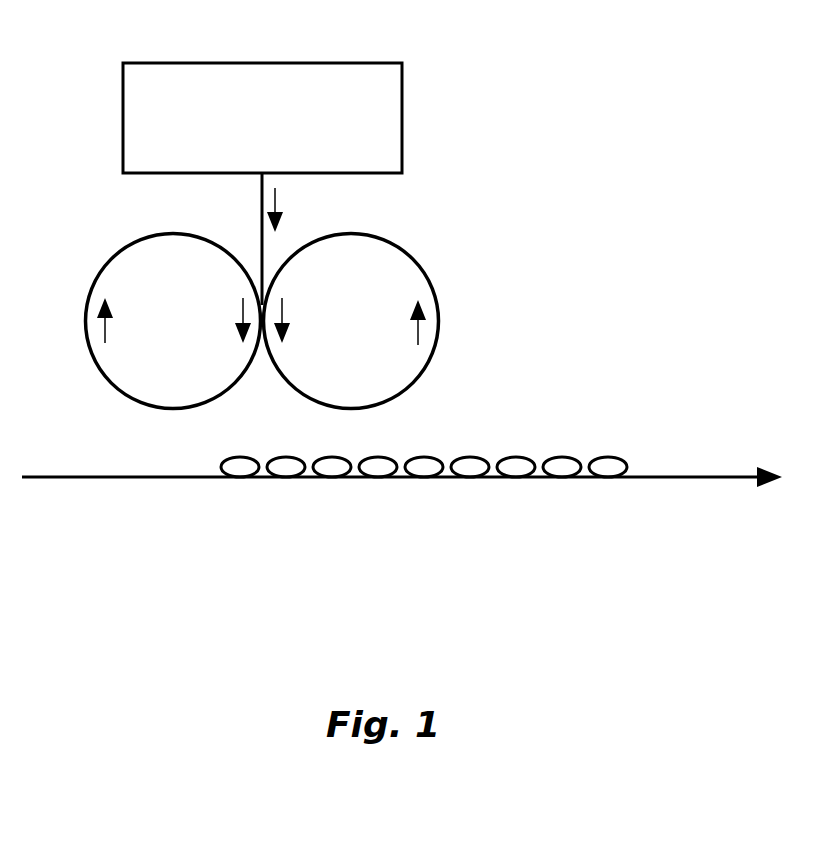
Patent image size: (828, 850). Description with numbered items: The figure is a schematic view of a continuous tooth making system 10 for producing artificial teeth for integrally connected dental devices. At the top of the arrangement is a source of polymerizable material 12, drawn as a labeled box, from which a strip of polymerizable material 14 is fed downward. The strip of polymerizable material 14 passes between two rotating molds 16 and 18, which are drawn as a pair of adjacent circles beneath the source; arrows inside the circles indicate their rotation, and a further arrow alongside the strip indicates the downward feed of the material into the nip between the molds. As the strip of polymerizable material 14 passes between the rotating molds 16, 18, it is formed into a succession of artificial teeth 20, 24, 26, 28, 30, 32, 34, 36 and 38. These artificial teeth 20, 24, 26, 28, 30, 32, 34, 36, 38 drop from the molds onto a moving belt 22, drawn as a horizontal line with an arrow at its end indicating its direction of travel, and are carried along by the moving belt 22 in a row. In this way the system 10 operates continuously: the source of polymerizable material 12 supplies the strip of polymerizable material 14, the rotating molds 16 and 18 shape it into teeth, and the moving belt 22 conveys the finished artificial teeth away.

The continuous tooth making system 10 is at (633, 87).
The source of polymerizable material 12 is at (295, 63).
The strip of polymerizable material 14 is at (262, 225).
The rotating mold 16 is at (435, 290).
The rotating mold 18 is at (87, 300).
The artificial tooth 20 is at (233, 457).
The moving belt 22 is at (145, 478).
The artificial tooth 24 is at (305, 480).
The artificial tooth 26 is at (322, 457).
The artificial tooth 28 is at (397, 480).
The artificial tooth 30 is at (415, 457).
The artificial tooth 32 is at (488, 480).
The artificial tooth 34 is at (505, 457).
The artificial tooth 36 is at (580, 480).
The artificial tooth 38 is at (598, 457).